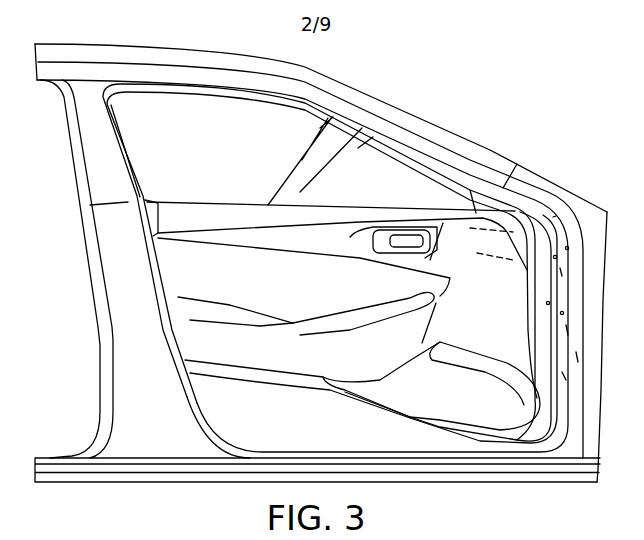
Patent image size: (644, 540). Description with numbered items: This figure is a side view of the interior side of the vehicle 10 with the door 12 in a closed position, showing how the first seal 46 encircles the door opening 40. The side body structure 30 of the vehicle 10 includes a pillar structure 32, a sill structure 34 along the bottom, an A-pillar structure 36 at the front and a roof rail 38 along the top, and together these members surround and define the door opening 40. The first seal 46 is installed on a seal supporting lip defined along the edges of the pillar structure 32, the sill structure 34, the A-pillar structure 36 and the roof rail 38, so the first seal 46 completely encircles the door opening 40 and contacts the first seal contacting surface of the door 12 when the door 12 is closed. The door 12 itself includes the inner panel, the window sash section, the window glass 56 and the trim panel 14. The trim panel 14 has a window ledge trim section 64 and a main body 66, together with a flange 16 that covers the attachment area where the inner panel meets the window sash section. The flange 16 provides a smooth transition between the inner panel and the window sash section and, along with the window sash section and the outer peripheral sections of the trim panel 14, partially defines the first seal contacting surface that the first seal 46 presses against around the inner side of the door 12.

The vehicle 10 is at (523, 124).
The door 12 is at (499, 455).
The trim panel 14 is at (243, 410).
The flange 16 is at (143, 202).
The side body structure 30 is at (328, 73).
The pillar structure 32 is at (115, 247).
The sill structure 34 is at (439, 467).
The A-pillar structure 36 is at (405, 120).
The roof rail 38 is at (170, 72).
The door opening 40 is at (118, 147).
The first seal 46 is at (115, 120).
The window glass 56 is at (424, 188).
The window ledge trim section 64 is at (238, 218).
The main body 66 is at (205, 270).